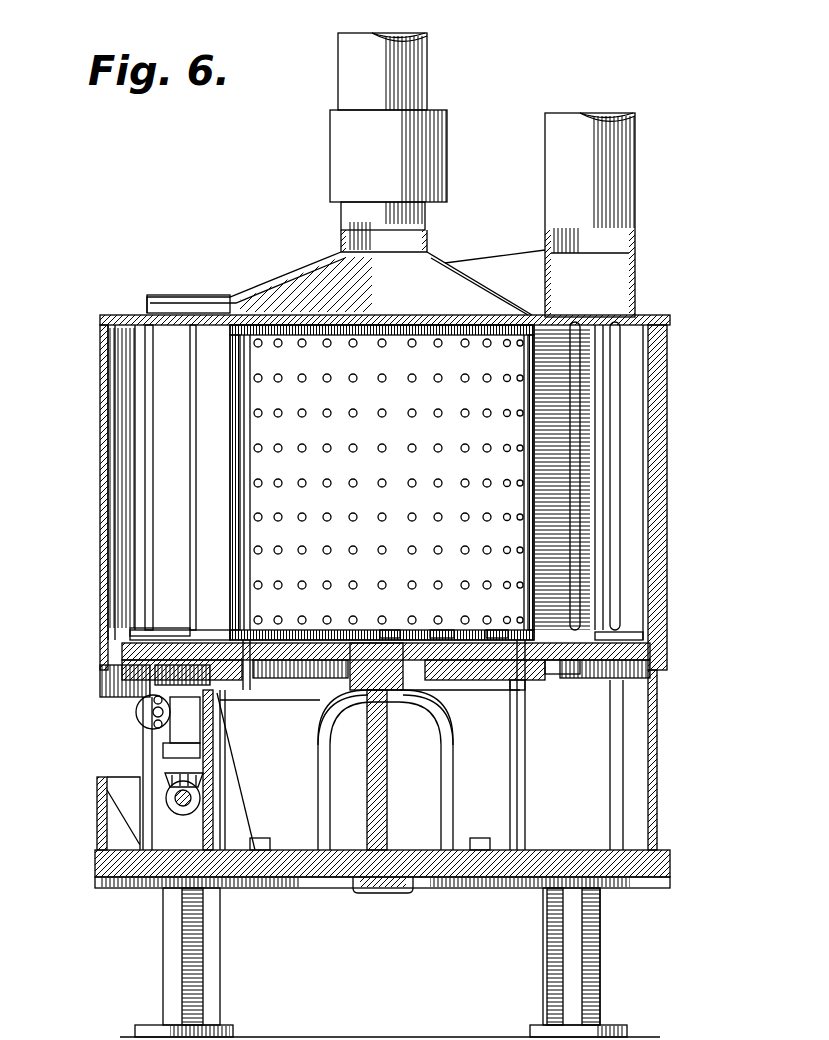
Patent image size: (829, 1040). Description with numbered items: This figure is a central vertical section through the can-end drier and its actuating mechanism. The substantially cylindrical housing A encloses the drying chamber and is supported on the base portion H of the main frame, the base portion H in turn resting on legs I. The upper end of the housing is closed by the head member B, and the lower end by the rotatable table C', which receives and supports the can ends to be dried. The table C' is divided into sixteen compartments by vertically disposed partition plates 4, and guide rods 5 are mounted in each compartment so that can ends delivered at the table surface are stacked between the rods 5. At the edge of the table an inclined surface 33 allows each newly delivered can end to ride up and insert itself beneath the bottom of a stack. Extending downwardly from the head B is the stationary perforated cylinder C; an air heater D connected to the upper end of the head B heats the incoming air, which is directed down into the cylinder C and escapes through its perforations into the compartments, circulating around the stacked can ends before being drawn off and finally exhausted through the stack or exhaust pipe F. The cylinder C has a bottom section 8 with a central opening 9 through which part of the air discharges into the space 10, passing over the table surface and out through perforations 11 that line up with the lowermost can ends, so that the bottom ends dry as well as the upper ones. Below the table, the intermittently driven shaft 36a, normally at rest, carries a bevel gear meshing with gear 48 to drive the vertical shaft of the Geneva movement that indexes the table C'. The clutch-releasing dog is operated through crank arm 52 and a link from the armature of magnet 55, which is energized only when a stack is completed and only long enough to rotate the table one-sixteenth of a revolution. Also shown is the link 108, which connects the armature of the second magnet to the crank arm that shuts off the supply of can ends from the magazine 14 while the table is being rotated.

The air heater D is at (428, 142).
The exhaust pipe F is at (628, 185).
The head member B is at (443, 262).
The housing A is at (676, 405).
The partition plates 4 is at (135, 382).
The guide rods 5 is at (188, 436).
The can end receiving magazine 14 is at (632, 358).
The perforated cylinder C is at (474, 482).
The inclined surface 33 is at (575, 652).
The perforations 11 is at (198, 619).
The central opening 9 is at (387, 636).
The space 10 is at (442, 636).
The bottom section 8 is at (494, 636).
The table C' is at (404, 751).
The crank arm 52 is at (140, 706).
The magnet 55 is at (150, 713).
The link 108 is at (163, 750).
The gear 48 is at (170, 776).
The intermittently driven shaft 36a is at (176, 799).
The base portion H is at (444, 888).
The legs I is at (218, 960).